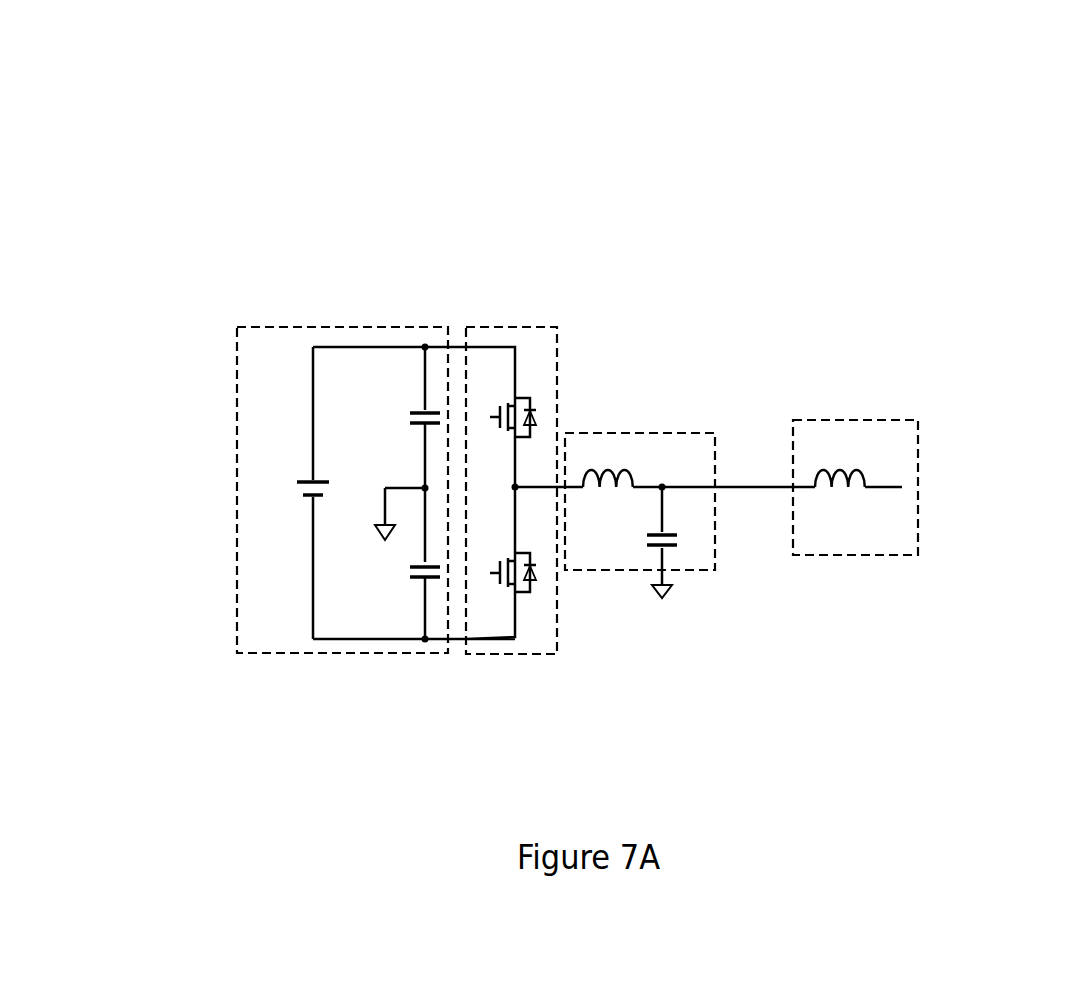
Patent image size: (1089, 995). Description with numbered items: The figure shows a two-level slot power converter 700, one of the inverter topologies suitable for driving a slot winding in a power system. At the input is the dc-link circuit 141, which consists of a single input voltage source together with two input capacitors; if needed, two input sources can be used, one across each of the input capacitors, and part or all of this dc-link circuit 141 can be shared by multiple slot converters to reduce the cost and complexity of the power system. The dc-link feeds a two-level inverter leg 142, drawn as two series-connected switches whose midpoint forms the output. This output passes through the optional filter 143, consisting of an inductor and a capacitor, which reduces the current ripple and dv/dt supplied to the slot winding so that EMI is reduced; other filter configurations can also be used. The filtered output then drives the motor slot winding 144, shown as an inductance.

The motor drive circuit 700 is at (1002, 94).
The dc-link circuit 141 is at (353, 320).
The half-bridge inverter leg 142 is at (531, 657).
The optional filter 143 is at (627, 571).
The motor 144 is at (869, 557).